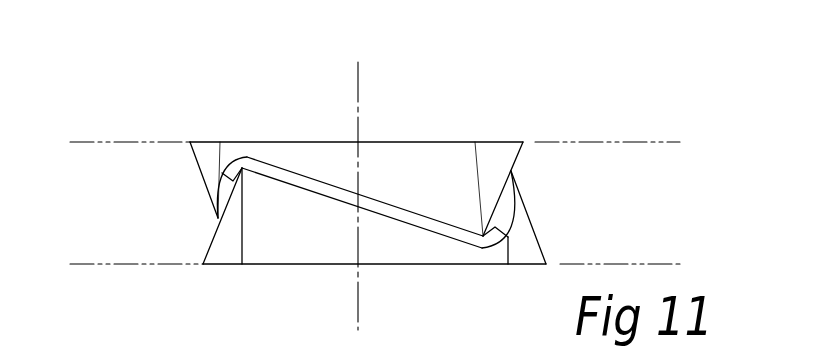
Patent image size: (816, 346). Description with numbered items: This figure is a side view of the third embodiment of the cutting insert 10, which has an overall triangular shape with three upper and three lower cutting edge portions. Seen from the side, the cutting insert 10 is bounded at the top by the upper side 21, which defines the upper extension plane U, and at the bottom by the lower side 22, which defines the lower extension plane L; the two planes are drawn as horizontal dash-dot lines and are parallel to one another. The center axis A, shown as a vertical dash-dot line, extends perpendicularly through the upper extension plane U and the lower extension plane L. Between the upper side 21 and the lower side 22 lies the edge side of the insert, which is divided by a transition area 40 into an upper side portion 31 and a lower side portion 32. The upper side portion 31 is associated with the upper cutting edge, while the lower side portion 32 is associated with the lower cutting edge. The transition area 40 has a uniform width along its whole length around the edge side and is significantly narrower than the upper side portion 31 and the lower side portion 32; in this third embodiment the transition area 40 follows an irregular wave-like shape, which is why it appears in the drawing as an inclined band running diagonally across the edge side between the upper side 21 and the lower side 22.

The cutting insert 10 is at (375, 184).
The upper side 21 is at (407, 142).
The lower side 22 is at (403, 265).
The upper side portion 31 is at (502, 162).
The lower side portion 32 is at (527, 242).
The transition area 40 is at (223, 192).
The center axis A is at (357, 95).
The upper extension plane U is at (127, 142).
The lower extension plane L is at (127, 266).